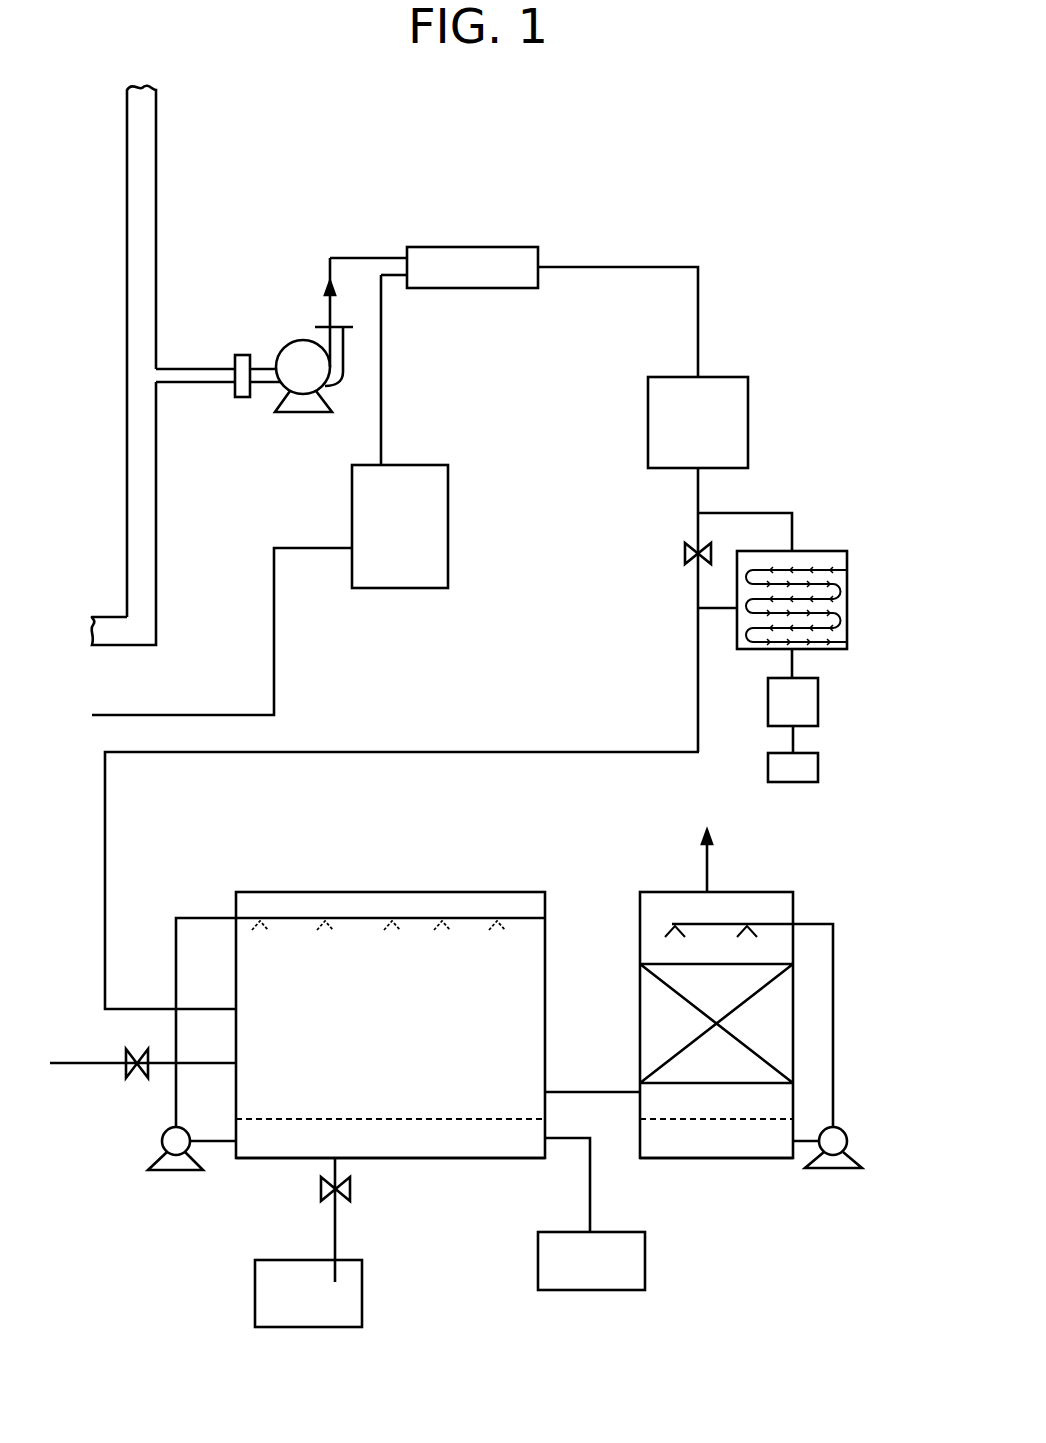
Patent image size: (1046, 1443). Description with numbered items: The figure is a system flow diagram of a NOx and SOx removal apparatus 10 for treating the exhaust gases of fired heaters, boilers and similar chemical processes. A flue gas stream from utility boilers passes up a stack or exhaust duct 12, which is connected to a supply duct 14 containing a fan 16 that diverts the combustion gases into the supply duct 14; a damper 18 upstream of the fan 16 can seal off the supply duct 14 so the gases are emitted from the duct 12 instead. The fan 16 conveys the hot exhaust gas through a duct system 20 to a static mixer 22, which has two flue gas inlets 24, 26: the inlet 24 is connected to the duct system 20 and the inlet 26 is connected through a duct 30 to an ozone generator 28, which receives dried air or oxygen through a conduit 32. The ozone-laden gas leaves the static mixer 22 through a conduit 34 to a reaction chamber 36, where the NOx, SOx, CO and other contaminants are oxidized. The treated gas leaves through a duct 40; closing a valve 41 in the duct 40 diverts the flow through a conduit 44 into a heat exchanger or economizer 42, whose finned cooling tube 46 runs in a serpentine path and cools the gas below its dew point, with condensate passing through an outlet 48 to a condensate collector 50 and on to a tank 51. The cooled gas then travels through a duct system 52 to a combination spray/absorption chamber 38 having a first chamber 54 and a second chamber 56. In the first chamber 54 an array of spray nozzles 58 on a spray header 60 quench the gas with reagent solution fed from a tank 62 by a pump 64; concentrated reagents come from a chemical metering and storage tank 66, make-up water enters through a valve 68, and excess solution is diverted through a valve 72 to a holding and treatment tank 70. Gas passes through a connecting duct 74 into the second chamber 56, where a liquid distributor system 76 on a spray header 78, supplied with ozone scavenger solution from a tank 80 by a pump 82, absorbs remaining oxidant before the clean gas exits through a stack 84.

The NOx and SOx removal apparatus 10 is at (503, 222).
The stack or exhaust duct 12 is at (127, 566).
The supply duct 14 is at (183, 383).
The fan 16 is at (287, 342).
The damper 18 is at (207, 369).
The duct system 20 is at (353, 258).
The static mixer 22 is at (443, 247).
The flue gas inlet 24 is at (407, 257).
The flue gas inlet 26 is at (407, 288).
The ozone generator 28 is at (352, 513).
The duct 30 is at (382, 372).
The conduit 32 is at (215, 715).
The conduit 34 is at (698, 347).
The reaction chamber 36 is at (648, 440).
The spray/absorption chamber 38 is at (520, 870).
The duct 40 is at (698, 495).
The valve 41 is at (686, 553).
The heat exchanger or economizer 42 is at (814, 575).
The conduit 44 is at (757, 513).
The cooling tube 46 is at (757, 570).
The outlet 48 is at (793, 670).
The condensate collector 50 is at (818, 708).
The tank 51 is at (818, 768).
The duct system 52 is at (273, 752).
The first chamber 54 is at (351, 1019).
The second chamber 56 is at (682, 1020).
The spray nozzles 58 is at (417, 920).
The spray header 60 is at (200, 918).
The tank 62 is at (440, 1148).
The pump 64 is at (162, 1133).
The chemical metering and storage tank 66 is at (538, 1272).
The valve 68 is at (126, 1055).
The holding and treatment tank 70 is at (362, 1298).
The valve 72 is at (321, 1188).
The connecting duct 74 is at (593, 1092).
The spray nozzles or liquid distributor system 76 is at (700, 922).
The spray header 78 is at (813, 924).
The tank 80 is at (697, 1150).
The pump 82 is at (843, 1132).
The stack 84 is at (707, 868).